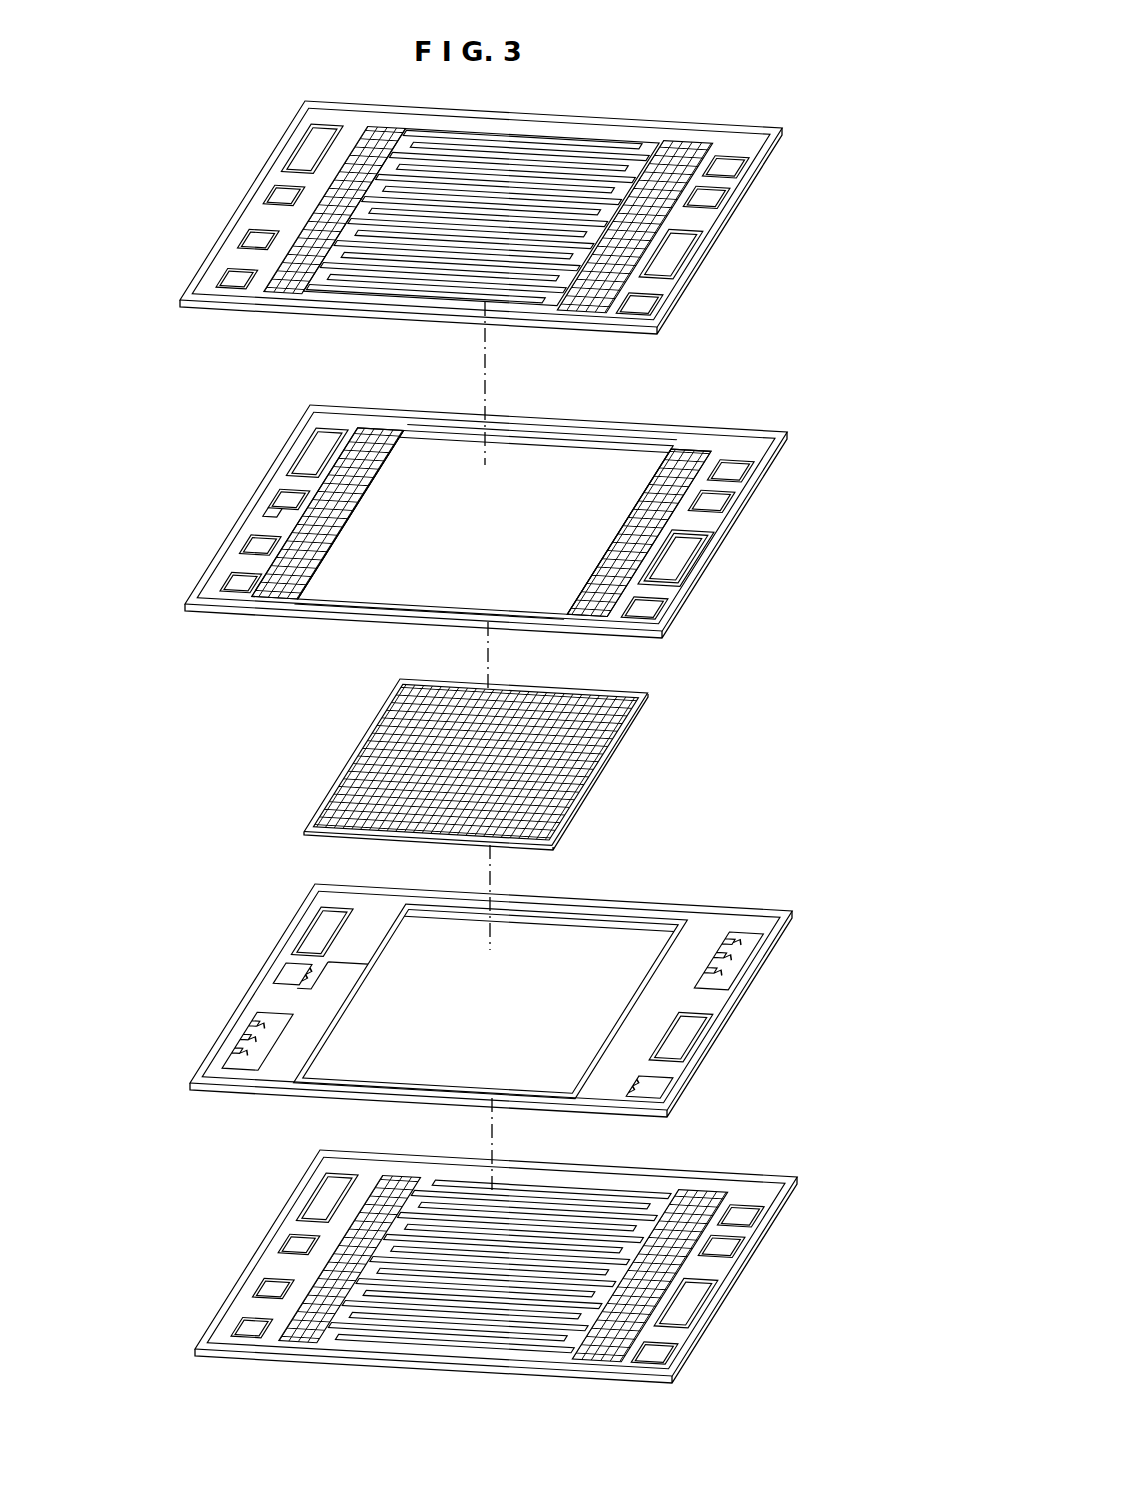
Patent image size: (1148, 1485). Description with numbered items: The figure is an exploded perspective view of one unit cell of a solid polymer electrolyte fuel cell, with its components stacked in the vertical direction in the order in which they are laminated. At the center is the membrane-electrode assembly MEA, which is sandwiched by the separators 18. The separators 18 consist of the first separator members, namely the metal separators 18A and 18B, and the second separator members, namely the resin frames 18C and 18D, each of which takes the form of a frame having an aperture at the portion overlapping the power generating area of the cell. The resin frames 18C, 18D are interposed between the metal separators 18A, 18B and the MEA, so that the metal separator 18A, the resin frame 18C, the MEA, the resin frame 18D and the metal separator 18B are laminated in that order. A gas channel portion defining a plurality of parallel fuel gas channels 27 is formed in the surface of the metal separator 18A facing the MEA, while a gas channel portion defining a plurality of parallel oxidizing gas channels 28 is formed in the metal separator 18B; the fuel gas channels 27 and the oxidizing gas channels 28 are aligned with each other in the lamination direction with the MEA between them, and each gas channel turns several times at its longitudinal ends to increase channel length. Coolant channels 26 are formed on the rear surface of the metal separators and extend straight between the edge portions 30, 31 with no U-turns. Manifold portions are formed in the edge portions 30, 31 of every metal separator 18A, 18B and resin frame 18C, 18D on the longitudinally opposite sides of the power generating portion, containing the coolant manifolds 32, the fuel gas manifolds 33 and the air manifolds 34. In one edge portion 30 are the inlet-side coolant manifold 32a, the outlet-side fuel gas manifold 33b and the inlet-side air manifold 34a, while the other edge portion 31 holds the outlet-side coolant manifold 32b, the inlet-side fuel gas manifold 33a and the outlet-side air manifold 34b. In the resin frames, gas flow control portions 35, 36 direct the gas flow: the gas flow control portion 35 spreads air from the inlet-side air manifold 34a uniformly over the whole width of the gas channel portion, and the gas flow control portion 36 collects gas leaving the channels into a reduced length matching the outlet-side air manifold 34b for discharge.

The separators 18 is at (249, 190).
The metal separator 18A is at (712, 1327).
The metal separator 18B is at (735, 203).
The resin frame 18C is at (710, 1050).
The resin frame 18D is at (740, 520).
The coolant channels 26 is at (438, 228).
The fuel gas channels 27 is at (320, 1250).
The oxidizing gas channels 28 is at (520, 240).
The edge portion 30 is at (700, 437).
The edge portion 31 is at (378, 437).
The coolant manifolds 32 is at (667, 560).
The inlet-side coolant manifold 32a is at (673, 248).
The outlet-side coolant manifold 32b is at (322, 152).
The fuel gas manifolds 33 is at (285, 495).
The inlet-side fuel gas manifold 33a is at (262, 515).
The outlet-side fuel gas manifold 33b is at (665, 610).
The air manifolds 34 is at (195, 600).
The inlet-side air manifold 34a is at (712, 500).
The outlet-side air manifold 34b is at (225, 575).
The gas flow control portion 35 is at (598, 607).
The gas flow control portion 36 is at (292, 585).
The membrane-electrode assembly MEA is at (600, 767).